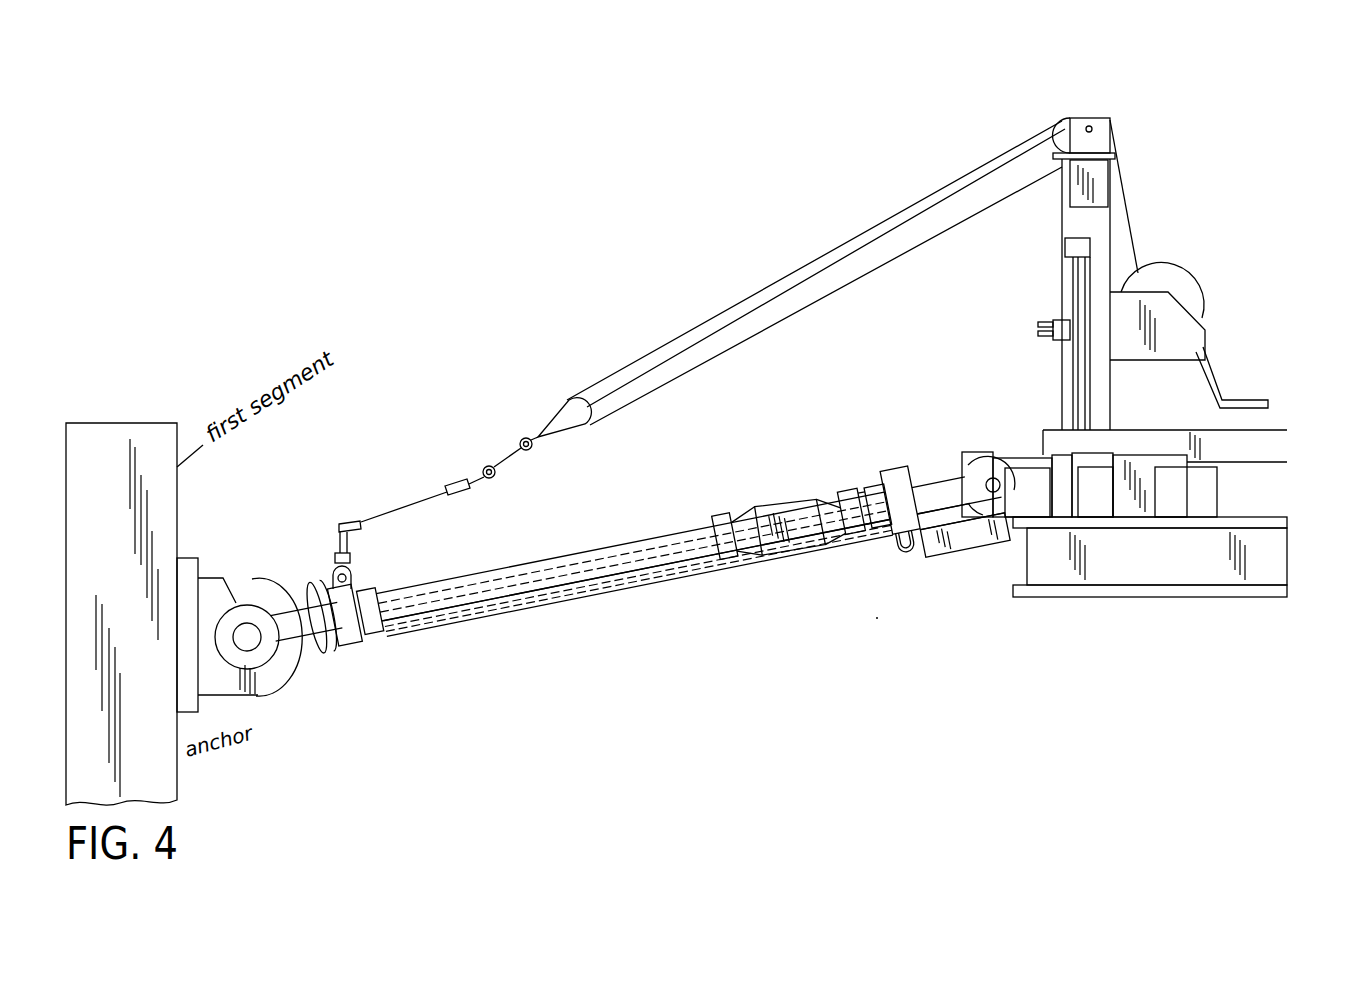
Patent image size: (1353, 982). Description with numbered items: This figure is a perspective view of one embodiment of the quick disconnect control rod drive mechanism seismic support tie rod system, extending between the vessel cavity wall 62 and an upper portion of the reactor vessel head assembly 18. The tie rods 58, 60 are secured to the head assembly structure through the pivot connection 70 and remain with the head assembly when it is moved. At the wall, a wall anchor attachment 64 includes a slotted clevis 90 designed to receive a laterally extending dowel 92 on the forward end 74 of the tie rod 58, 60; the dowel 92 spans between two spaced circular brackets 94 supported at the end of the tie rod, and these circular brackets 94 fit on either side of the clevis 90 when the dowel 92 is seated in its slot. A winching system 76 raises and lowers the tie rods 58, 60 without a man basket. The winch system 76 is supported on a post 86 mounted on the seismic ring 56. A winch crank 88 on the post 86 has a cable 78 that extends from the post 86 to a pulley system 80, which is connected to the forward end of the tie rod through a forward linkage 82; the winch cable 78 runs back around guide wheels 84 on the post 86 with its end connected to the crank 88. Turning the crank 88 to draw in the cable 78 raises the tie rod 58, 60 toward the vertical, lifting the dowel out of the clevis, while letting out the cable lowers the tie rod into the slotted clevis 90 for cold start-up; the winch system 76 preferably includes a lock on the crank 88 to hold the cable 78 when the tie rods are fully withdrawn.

The base / machine frame 18 is at (1125, 602).
The seismic ring 56 is at (1020, 557).
The tie rod 58 is at (750, 570).
The tie rod 60 is at (657, 557).
The wall / first segment 62 is at (177, 775).
The wall anchor attachment 64 is at (190, 539).
The pivot connection 70 is at (978, 470).
The forward end 74 is at (304, 605).
The winching system 76 is at (1142, 205).
The cable 78 is at (762, 333).
The pulley system 80 is at (560, 415).
The forward linkage 82 is at (415, 502).
The guide wheels 84 is at (1092, 129).
The post 86 is at (1060, 220).
The winch crank 88 is at (1177, 287).
The slotted clevis 90 is at (287, 663).
The dowel 92 is at (253, 640).
The circular brackets 94 is at (240, 607).